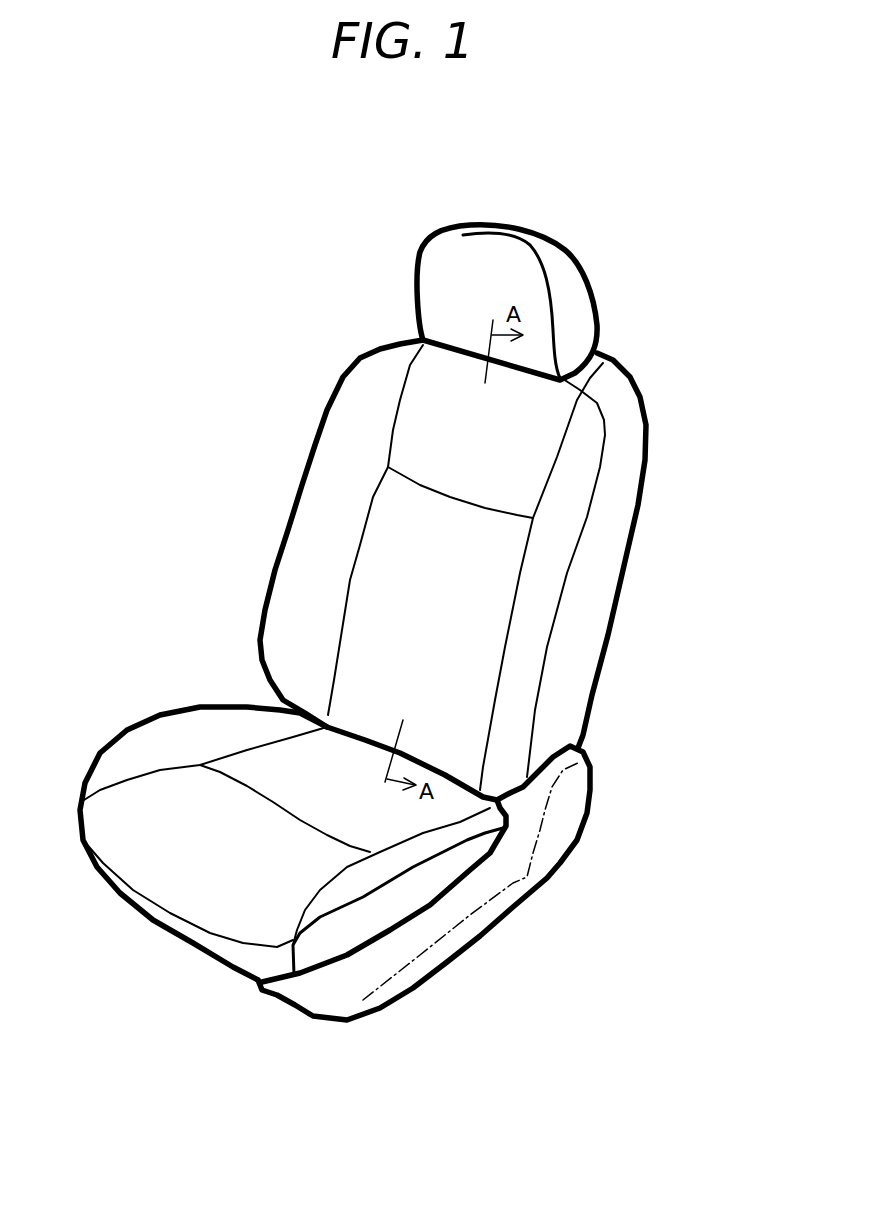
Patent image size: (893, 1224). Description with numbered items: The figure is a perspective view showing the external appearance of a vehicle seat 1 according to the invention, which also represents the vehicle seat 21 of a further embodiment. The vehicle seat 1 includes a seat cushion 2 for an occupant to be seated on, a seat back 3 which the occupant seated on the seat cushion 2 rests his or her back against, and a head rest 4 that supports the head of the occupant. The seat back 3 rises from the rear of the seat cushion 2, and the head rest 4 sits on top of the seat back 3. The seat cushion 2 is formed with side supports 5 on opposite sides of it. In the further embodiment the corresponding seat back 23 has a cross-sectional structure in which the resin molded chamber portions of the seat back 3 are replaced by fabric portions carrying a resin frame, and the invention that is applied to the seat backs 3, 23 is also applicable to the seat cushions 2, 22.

The vehicle seat 1 is at (507, 570).
The vehicle seat 21 is at (507, 570).
The seat cushion 2 is at (451, 883).
The seat cushion 22 is at (451, 883).
The seat back 3 is at (527, 567).
The seat back 23 is at (527, 567).
The head rest 4 is at (570, 300).
The side supports 5 is at (272, 827).